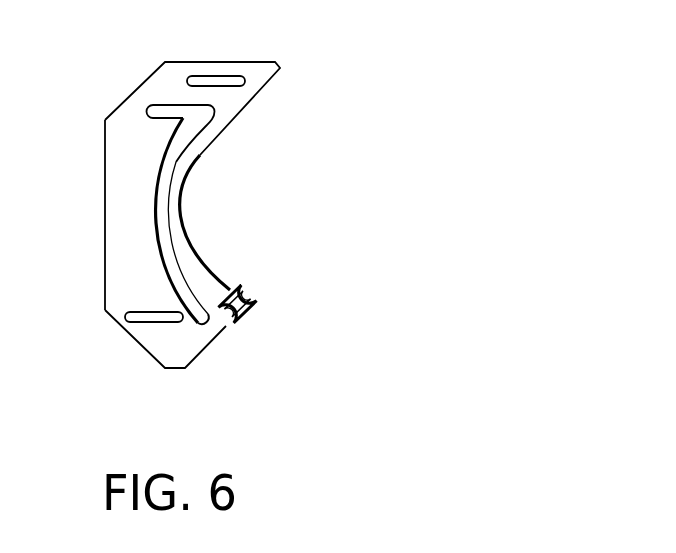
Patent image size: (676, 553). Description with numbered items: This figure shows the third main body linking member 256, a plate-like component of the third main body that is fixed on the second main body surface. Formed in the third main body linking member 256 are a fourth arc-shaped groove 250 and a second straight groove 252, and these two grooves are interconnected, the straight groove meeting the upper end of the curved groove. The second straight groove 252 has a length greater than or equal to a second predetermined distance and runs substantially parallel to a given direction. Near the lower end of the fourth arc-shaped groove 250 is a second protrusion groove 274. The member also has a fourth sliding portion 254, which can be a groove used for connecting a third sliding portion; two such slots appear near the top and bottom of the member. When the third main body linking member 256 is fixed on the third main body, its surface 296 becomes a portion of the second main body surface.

The fourth arc-shaped groove 250 is at (172, 217).
The second straight groove 252 is at (172, 102).
The fourth sliding portion 254 is at (227, 72).
The third main body linking member 256 is at (566, 36).
The second protrusion groove 274 is at (244, 316).
The surface 296 is at (128, 157).